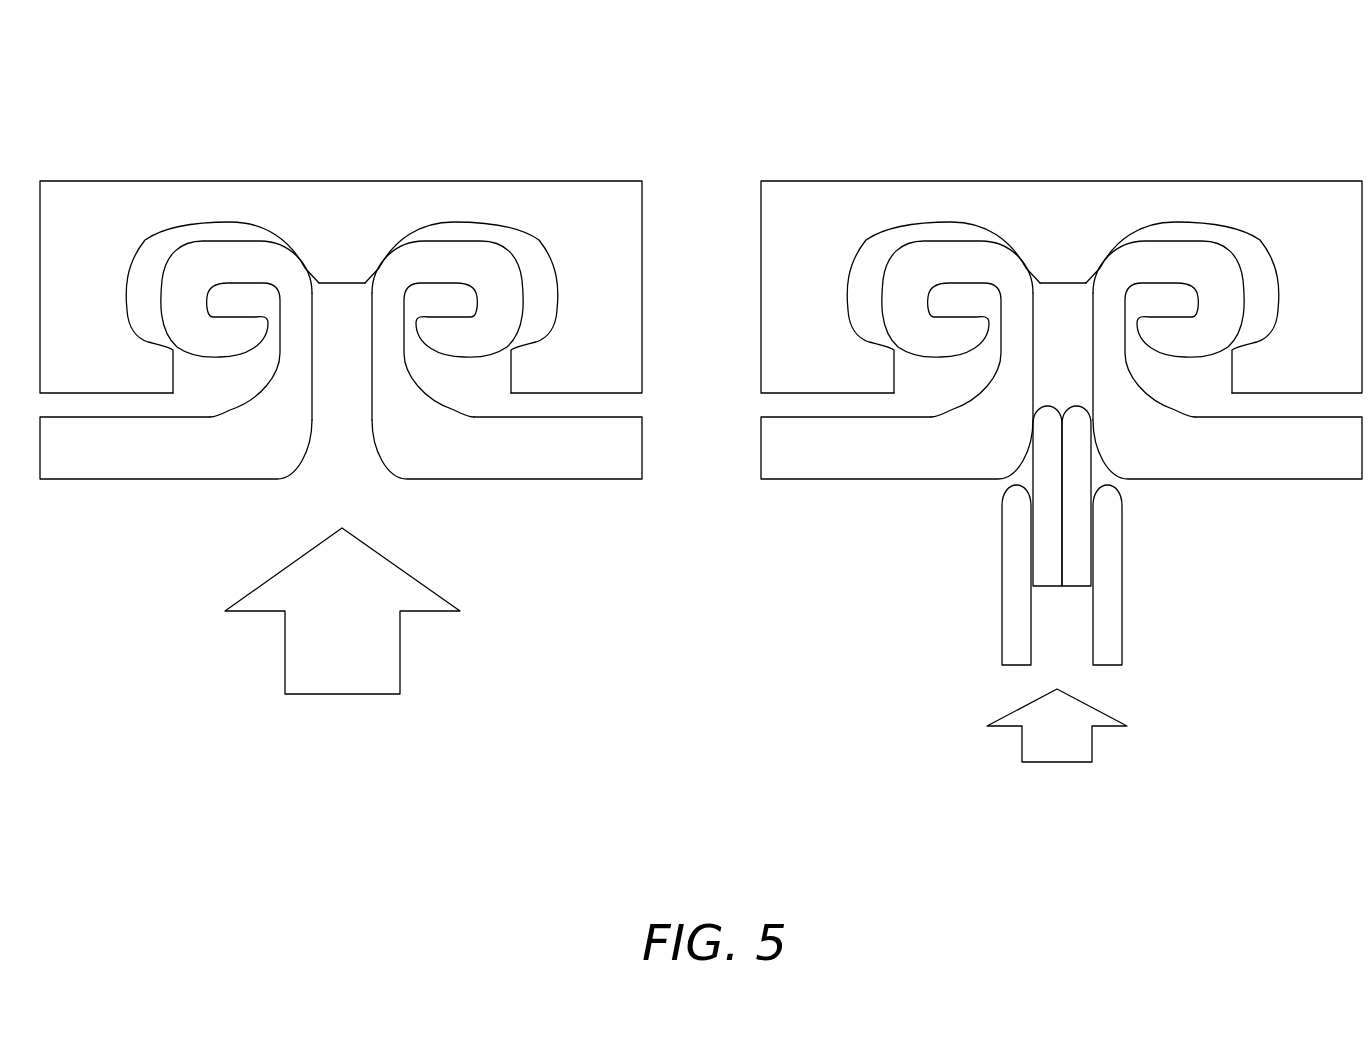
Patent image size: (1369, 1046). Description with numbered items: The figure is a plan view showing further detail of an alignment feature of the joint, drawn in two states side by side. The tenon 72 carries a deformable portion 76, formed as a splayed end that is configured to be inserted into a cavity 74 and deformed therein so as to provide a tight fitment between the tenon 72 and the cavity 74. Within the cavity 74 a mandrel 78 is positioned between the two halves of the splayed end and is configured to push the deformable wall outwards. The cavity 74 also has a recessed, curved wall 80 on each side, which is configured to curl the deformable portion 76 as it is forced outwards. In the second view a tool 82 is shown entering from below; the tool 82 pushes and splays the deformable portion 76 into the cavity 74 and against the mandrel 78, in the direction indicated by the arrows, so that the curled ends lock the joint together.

The tenon 72 is at (152, 460).
The cavity 74 is at (458, 212).
The deformable portion 76 is at (182, 282).
The mandrel 78 is at (340, 248).
The recessed, curved wall 80 is at (532, 243).
The tool 82 is at (1122, 607).